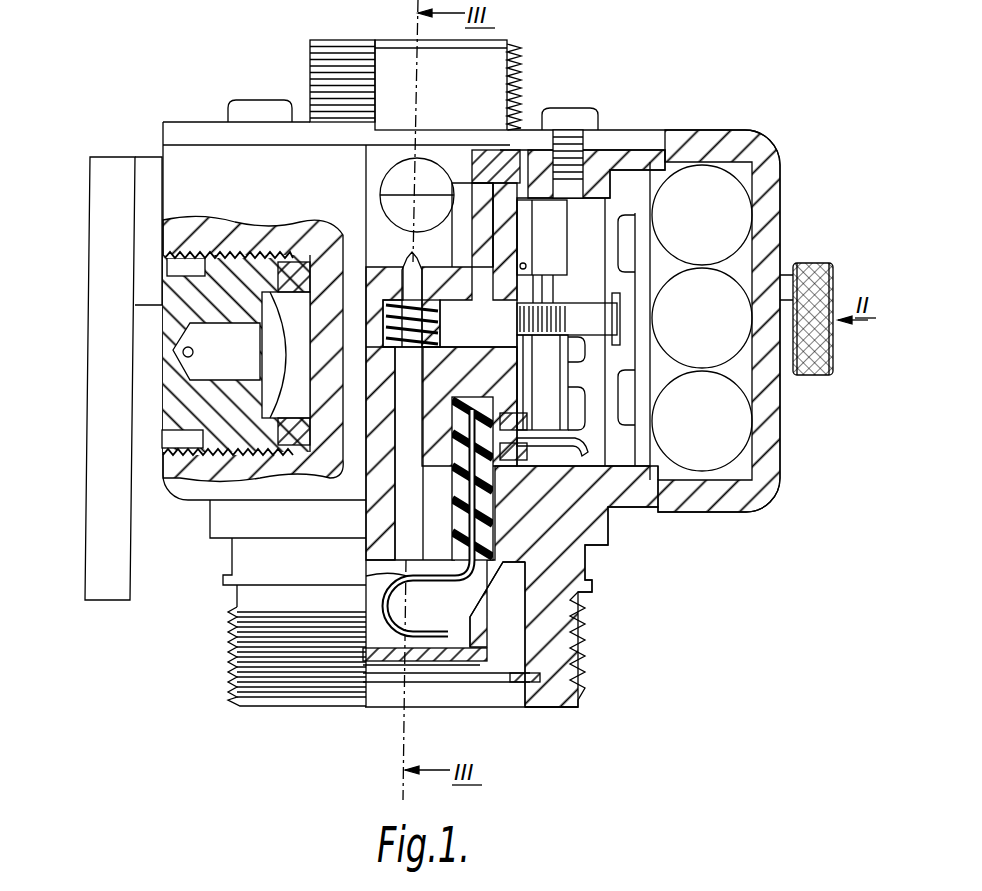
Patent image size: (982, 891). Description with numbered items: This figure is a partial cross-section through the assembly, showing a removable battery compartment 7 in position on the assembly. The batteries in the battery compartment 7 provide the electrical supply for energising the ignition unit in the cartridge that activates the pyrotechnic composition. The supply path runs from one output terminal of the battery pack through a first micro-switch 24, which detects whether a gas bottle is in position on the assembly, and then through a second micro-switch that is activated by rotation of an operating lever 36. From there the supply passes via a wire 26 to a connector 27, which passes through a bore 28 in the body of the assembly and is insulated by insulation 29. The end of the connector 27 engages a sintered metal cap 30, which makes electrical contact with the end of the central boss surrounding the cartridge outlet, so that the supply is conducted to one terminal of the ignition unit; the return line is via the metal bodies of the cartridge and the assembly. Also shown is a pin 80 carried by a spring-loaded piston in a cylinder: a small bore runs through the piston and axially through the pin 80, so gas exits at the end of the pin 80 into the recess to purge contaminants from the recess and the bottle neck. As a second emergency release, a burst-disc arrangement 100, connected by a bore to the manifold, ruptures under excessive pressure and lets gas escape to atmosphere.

The battery compartment 7 is at (760, 500).
The first micro-switch 24 is at (555, 368).
The wire 26 is at (570, 446).
The connector 27 is at (470, 550).
The bore 28 is at (490, 518).
The insulation 29 is at (485, 578).
The sintered metal cap 30 is at (453, 662).
The operating lever 36 is at (108, 487).
The pin 80 is at (418, 258).
The burst-disc arrangement 100 is at (251, 235).